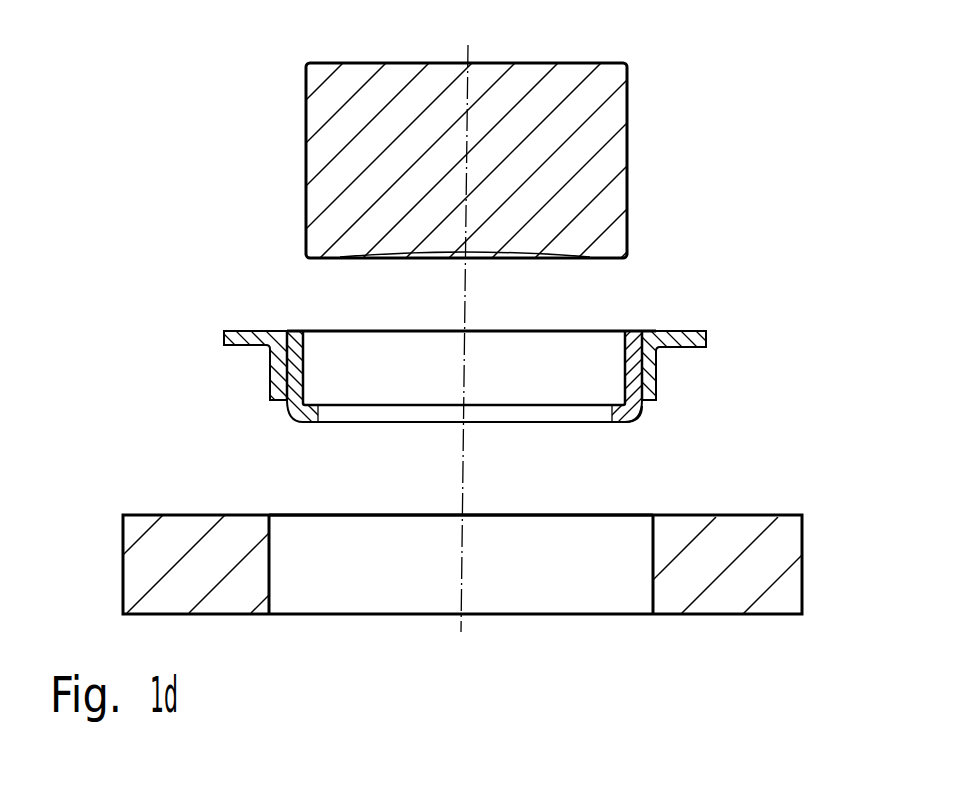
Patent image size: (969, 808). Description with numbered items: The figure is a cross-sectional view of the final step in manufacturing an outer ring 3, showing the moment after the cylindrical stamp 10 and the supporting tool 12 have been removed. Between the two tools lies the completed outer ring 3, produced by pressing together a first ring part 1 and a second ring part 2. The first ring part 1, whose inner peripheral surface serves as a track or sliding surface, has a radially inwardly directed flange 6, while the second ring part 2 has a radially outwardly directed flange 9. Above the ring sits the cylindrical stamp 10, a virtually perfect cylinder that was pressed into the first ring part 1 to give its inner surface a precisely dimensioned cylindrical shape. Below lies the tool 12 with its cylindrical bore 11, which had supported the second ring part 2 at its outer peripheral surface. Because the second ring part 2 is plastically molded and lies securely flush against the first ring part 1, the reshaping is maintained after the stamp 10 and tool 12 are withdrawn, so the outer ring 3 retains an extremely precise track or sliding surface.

The first ring part 1 is at (524, 336).
The second ring part 2 is at (651, 342).
The outer ring 3 is at (473, 351).
The radially inwardly directed flange 6 is at (635, 417).
The radially outwardly directed flange 9 is at (695, 331).
The cylindrical stamp 10 is at (541, 118).
The cylindrical bore 11 is at (520, 548).
The tool 12 is at (452, 537).